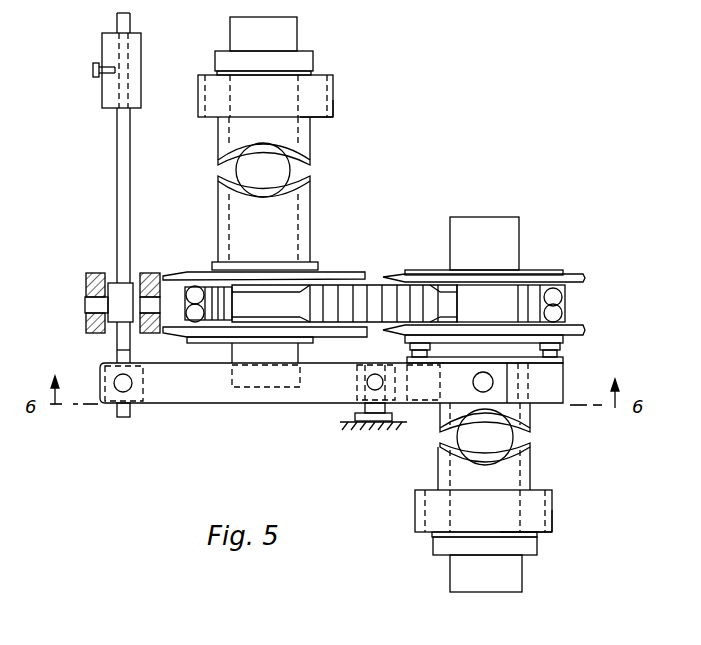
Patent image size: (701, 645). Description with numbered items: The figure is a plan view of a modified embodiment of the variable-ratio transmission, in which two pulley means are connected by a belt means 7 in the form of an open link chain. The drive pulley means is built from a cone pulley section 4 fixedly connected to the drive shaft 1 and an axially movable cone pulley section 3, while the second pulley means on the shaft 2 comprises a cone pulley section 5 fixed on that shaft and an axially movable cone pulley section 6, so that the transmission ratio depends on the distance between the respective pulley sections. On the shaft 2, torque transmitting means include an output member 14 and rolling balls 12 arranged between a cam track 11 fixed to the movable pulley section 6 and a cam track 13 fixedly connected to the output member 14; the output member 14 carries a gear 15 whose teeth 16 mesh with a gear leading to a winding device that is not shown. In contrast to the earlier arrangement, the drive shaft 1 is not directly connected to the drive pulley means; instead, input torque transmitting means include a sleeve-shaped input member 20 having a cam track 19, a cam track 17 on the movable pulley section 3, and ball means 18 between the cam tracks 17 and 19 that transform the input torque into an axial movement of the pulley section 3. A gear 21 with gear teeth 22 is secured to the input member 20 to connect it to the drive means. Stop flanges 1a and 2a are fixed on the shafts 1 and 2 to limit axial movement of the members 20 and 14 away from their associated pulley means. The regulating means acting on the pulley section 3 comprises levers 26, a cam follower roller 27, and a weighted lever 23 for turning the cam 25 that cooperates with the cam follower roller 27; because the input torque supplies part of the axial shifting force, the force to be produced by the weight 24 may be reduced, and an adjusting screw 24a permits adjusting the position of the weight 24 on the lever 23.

The drive shaft 1 is at (512, 580).
The stop flange 1a is at (520, 546).
The shaft 2 is at (283, 28).
The stop flange 2a is at (305, 58).
The cone pulley section 3 is at (586, 331).
The cone pulley section 4 is at (585, 278).
The cone pulley section 5 is at (178, 334).
The cone pulley section 6 is at (176, 275).
The belt means 7 is at (366, 300).
The cam track 11 is at (312, 184).
The rolling balls 12 is at (278, 173).
The cam track 13 is at (311, 161).
The output member 14 is at (311, 135).
The gear 15 is at (315, 97).
The teeth 16 is at (331, 111).
The cam track 17 is at (533, 427).
The ball means 18 is at (490, 437).
The cam track 19 is at (531, 450).
The input member 20 is at (526, 480).
The gear 21 is at (530, 508).
The gear teeth 22 is at (549, 521).
The weighted lever 23 is at (122, 172).
The weight 24 is at (131, 65).
The adjusting screw 24a is at (95, 64).
The cam 25 is at (125, 341).
The levers 26 is at (176, 393).
The cam follower roller 27 is at (126, 418).